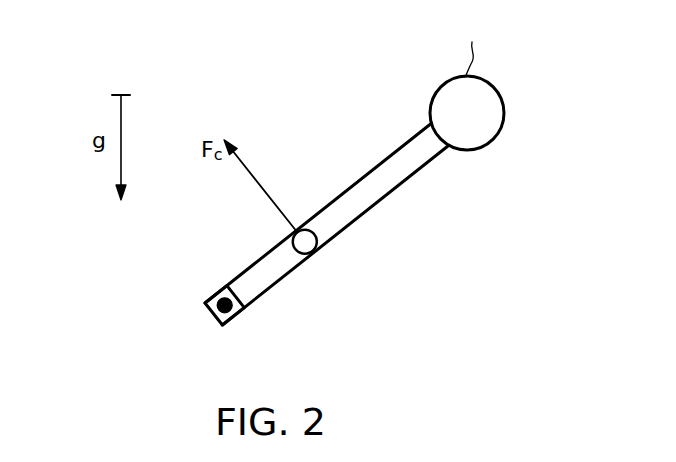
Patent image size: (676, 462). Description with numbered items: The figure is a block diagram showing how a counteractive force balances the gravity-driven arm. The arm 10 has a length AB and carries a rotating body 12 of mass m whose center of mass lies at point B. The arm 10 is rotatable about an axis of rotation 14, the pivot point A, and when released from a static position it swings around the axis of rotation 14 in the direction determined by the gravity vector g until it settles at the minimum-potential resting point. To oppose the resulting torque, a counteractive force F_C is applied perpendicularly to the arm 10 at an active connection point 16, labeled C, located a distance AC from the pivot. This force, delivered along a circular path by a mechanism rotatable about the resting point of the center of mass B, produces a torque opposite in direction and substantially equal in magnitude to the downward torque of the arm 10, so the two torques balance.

The arm 10 is at (365, 173).
The rotating body 12 is at (478, 149).
The axis of rotation 14 is at (238, 315).
The active connection point 16 is at (317, 235).